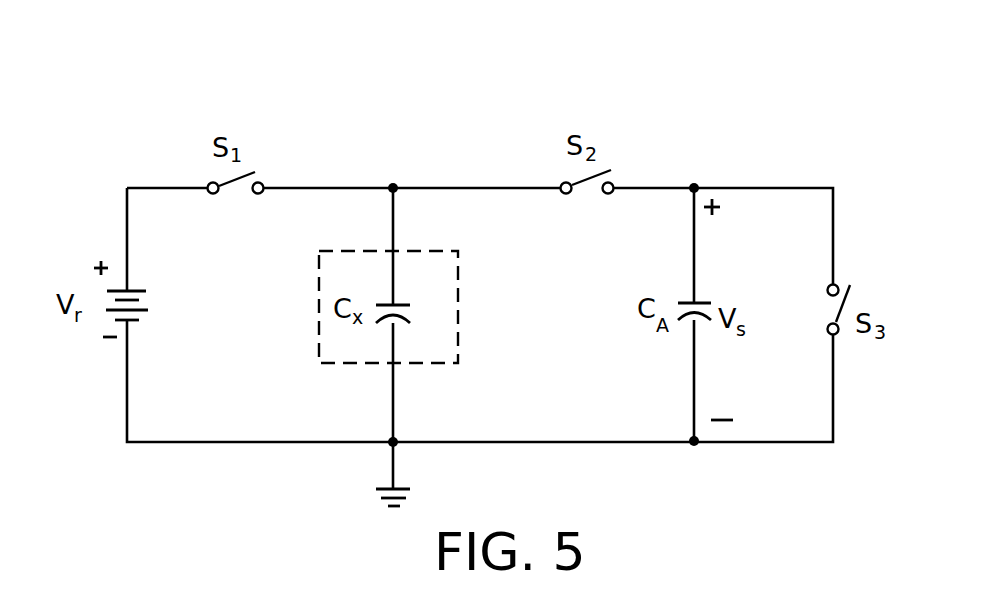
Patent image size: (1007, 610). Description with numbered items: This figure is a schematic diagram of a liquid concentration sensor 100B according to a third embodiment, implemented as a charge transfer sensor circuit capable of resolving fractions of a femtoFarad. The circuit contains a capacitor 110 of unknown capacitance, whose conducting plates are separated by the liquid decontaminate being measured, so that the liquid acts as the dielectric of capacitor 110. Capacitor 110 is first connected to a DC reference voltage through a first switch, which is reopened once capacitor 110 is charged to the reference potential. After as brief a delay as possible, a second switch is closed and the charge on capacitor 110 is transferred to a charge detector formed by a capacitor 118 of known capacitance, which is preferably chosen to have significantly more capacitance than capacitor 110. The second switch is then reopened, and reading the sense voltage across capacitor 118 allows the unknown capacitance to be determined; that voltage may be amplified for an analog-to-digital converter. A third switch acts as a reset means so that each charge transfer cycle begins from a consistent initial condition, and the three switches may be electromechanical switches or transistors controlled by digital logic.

The liquid concentration sensor 100B is at (148, 150).
The capacitor 110 is at (458, 288).
The capacitor 118 is at (682, 295).